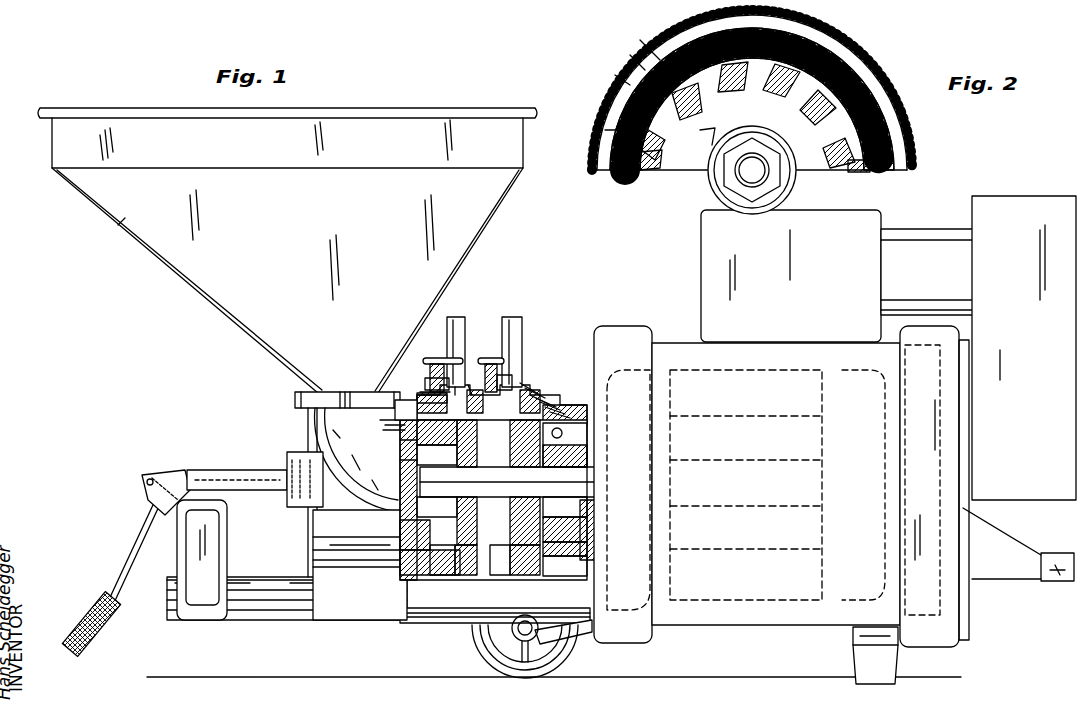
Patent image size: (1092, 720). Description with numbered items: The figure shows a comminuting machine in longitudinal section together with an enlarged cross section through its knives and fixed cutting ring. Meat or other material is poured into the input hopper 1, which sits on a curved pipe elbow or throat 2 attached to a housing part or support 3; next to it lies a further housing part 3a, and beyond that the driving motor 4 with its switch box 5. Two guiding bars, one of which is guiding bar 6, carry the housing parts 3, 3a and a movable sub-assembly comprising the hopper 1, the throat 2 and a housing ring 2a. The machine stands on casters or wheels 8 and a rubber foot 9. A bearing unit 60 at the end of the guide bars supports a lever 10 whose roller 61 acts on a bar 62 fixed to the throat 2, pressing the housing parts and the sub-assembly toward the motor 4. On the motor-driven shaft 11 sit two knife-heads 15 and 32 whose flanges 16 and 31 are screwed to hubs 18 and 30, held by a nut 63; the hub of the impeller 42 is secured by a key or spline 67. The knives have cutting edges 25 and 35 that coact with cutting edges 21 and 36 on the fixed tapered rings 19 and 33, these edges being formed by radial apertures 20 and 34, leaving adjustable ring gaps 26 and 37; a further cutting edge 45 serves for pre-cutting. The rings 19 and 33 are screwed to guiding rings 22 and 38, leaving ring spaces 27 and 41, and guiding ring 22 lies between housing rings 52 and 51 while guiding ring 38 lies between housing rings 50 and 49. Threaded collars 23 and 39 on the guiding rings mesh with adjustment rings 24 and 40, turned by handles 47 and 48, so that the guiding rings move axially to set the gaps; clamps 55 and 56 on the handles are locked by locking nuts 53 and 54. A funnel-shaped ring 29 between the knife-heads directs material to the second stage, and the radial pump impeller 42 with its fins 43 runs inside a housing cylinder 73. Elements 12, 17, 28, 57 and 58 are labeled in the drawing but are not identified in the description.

In FIG. 1, the input hopper 1 is at (125, 240).
In FIG. 1, the curved pipe elbow or throat 2 is at (315, 415).
In FIG. 1, the housing ring 2a is at (415, 560).
In FIG. 1, the housing part or support 3 is at (428, 624).
In FIG. 1, the housing part 3a is at (585, 638).
In FIG. 1, the driving motor 4 is at (722, 613).
In FIG. 1, the switch box 5 is at (1045, 500).
In FIG. 1, the guiding bar 6 is at (265, 612).
In FIG. 1, the casters or wheels 8 is at (567, 652).
In FIG. 1, the rubber foot 9 is at (860, 665).
In FIG. 1, the lever 10 is at (100, 608).
In FIG. 1, the shaft 11 is at (560, 482).
In FIG. 2, the shaft 11 is at (745, 175).
In FIG. 1, the rotor disc 12 is at (420, 472).
In FIG. 1, the knife-head 15 is at (425, 452).
In FIG. 2, the knife-head 15 is at (885, 122).
In FIG. 1, the flange 16 is at (398, 455).
In FIG. 2, the flange 16 is at (790, 110).
In FIG. 1, the housing ring 17 is at (400, 527).
In FIG. 2, the housing ring 17 is at (880, 100).
In FIG. 1, the hub 18 is at (400, 488).
In FIG. 2, the hub 18 is at (796, 170).
In FIG. 1, the tapered ring or shell 19 is at (390, 425).
In FIG. 2, the tapered ring or shell 19 is at (622, 75).
In FIG. 1, the radial apertures 20 is at (400, 560).
In FIG. 2, the radial apertures 20 is at (665, 50).
In FIG. 1, the cutting edge 21 is at (398, 436).
In FIG. 2, the cutting edge 21 is at (605, 128).
In FIG. 1, the guiding ring 22 is at (466, 390).
In FIG. 1, the outer threaded collar 23 is at (475, 392).
In FIG. 1, the adjustment ring 24 is at (435, 370).
In FIG. 1, the cutting edge 25 is at (408, 400).
In FIG. 2, the cutting edge 25 is at (860, 70).
In FIG. 1, the ring gap 26 is at (380, 528).
In FIG. 2, the ring gap 26 is at (640, 60).
In FIG. 1, the ring space 27 is at (440, 576).
In FIG. 2, the ring space 27 is at (905, 148).
In FIG. 1, the bearing 28 is at (468, 576).
In FIG. 1, the funnel-shaped ring 29 is at (498, 521).
In FIG. 1, the hub 30 is at (500, 500).
In FIG. 1, the flange 31 is at (575, 450).
In FIG. 1, the knife-head 32 is at (545, 405).
In FIG. 2, the knife-head 32 is at (752, 114).
In FIG. 1, the tapered ring or shell 33 is at (498, 443).
In FIG. 1, the radial apertures 34 is at (550, 566).
In FIG. 1, the cutting edge 35 is at (555, 556).
In FIG. 1, the cutting edge 36 is at (502, 576).
In FIG. 1, the ring gap 37 is at (525, 576).
In FIG. 1, the guiding ring 38 is at (533, 396).
In FIG. 1, the outer threaded collar 39 is at (538, 400).
In FIG. 1, the adjustment ring 40 is at (542, 404).
In FIG. 1, the ring space 41 is at (552, 412).
In FIG. 1, the impeller 42 is at (575, 478).
In FIG. 1, the fin 43 is at (575, 425).
In FIG. 2, the cutting edge 45 is at (705, 105).
In FIG. 1, the handle 47 is at (456, 318).
In FIG. 1, the handle 48 is at (516, 318).
In FIG. 1, the housing ring 49 is at (547, 408).
In FIG. 1, the housing ring 50 is at (490, 358).
In FIG. 1, the housing ring 51 is at (491, 365).
In FIG. 1, the housing ring 52 is at (418, 398).
In FIG. 1, the locking nut 53 is at (505, 378).
In FIG. 1, the locking nut 54 is at (428, 380).
In FIG. 1, the clamp 55 is at (425, 392).
In FIG. 1, the clamp 56 is at (522, 385).
In FIG. 1, the flange 57 is at (440, 358).
In FIG. 1, the ring 58 is at (528, 390).
In FIG. 1, the bearing unit 60 is at (220, 545).
In FIG. 1, the roller 61 is at (178, 468).
In FIG. 1, the bar 62 is at (245, 470).
In FIG. 1, the nut 63 is at (425, 495).
In FIG. 1, the key or spline 67 is at (575, 492).
In FIG. 1, the housing cylinder 73 is at (595, 550).